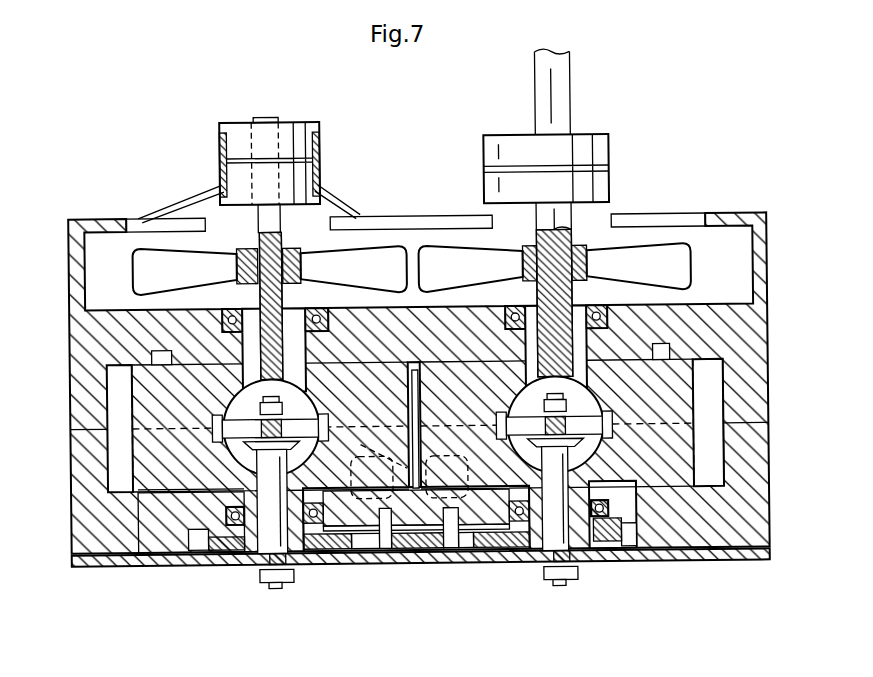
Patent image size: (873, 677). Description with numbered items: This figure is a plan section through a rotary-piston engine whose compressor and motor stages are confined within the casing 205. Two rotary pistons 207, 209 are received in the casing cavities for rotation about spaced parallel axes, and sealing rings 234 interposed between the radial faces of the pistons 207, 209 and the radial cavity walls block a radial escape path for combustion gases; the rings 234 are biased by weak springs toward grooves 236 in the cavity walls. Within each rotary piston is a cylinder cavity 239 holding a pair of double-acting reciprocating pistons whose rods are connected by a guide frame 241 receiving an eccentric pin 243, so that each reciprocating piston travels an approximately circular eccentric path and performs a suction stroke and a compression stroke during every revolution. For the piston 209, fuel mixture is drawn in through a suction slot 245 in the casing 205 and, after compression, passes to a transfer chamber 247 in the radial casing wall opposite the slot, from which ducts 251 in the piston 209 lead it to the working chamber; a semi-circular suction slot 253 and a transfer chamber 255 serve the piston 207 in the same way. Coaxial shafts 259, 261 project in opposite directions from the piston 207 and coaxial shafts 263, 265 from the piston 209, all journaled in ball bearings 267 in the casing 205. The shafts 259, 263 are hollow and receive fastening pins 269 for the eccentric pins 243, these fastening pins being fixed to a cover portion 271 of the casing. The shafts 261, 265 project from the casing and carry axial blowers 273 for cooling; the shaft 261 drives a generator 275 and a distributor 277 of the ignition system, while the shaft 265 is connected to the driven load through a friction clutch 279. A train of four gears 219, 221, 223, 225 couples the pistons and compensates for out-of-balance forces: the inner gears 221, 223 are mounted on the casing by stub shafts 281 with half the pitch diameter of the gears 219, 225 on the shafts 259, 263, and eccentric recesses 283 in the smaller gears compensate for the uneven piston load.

The casing 205 is at (78, 374).
The rotary piston 207 is at (190, 402).
The rotary piston 209 is at (724, 396).
The gear 219 is at (316, 548).
The gear 221 is at (374, 550).
The gear 223 is at (437, 552).
The gear 225 is at (508, 548).
The sealing ring 234 is at (132, 357).
The groove 236 is at (128, 493).
The cylinder cavity 239 is at (598, 456).
The guide frame 241 is at (584, 419).
The eccentric pin 243 is at (508, 400).
The suction slot 245 is at (668, 350).
The transfer chamber 247 is at (482, 488).
The duct 251 is at (397, 467).
The suction slot 253 is at (140, 343).
The transfer chamber 255 is at (365, 486).
The shaft 259 is at (250, 550).
The shaft 261 is at (260, 228).
The shaft 263 is at (583, 542).
The shaft 265 is at (573, 229).
The ball bearing 267 is at (232, 309).
The fastening pin 269 is at (277, 588).
The cover portion 271 is at (102, 563).
The axial blower 273 is at (145, 257).
The generator 275 is at (300, 171).
The distributor 277 is at (297, 128).
The friction clutch 279 is at (598, 170).
The stub shaft 281 is at (385, 549).
The eccentric recess 283 is at (372, 543).